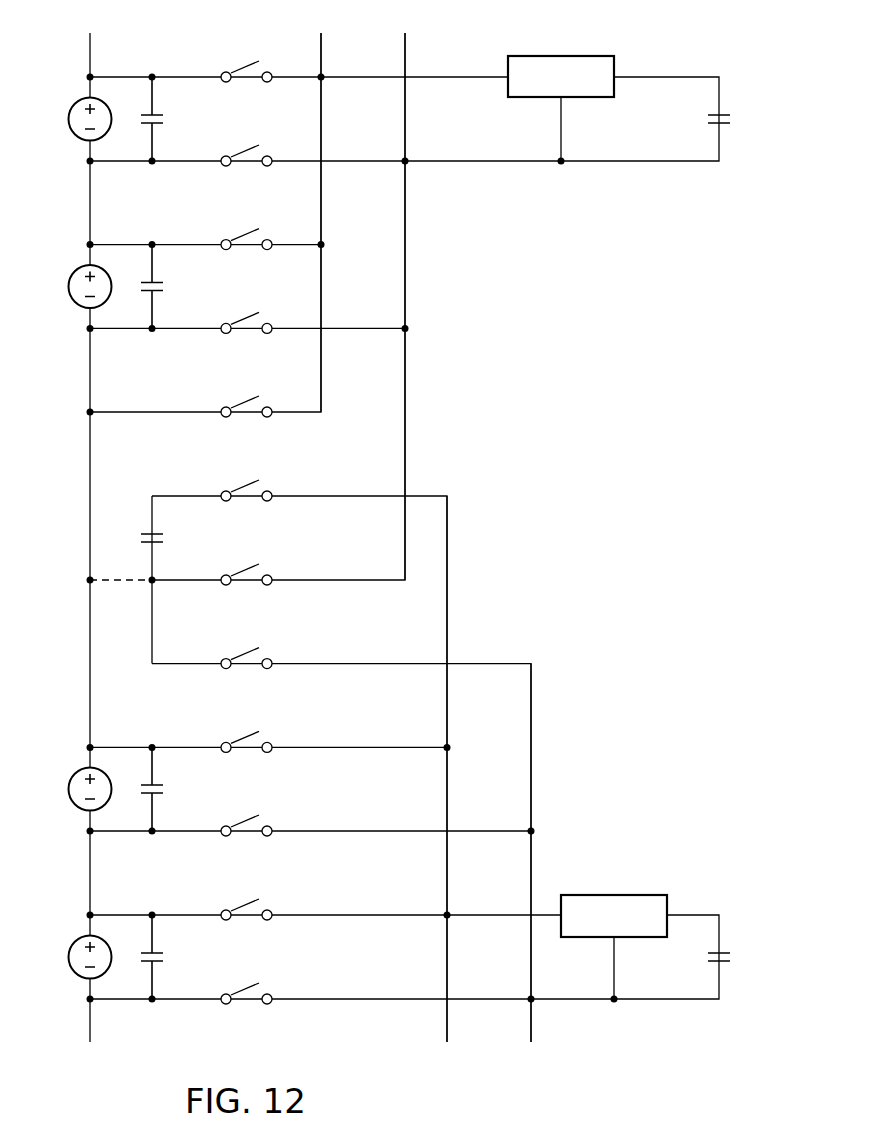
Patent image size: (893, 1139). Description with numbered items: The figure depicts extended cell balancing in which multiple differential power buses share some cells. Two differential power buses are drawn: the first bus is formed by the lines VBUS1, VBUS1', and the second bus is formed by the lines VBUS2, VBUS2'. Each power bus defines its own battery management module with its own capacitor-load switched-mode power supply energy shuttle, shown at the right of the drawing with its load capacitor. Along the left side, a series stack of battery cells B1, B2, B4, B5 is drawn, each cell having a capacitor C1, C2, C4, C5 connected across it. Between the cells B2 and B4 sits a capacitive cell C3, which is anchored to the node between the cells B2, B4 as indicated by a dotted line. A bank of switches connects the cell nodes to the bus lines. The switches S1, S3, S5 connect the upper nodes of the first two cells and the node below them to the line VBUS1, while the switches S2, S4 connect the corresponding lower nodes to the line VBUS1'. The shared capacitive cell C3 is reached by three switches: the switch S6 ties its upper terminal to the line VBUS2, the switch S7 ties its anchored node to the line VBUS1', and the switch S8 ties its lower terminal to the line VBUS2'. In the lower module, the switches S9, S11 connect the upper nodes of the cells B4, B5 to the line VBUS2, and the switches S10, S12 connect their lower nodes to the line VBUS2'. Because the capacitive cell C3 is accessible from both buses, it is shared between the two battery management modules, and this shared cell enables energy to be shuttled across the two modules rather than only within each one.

The cell B1 is at (77, 119).
The cell B2 is at (77, 286).
The cell B4 is at (77, 789).
The cell B5 is at (77, 957).
The capacitor C1 is at (168, 119).
The capacitor C2 is at (168, 287).
The capacitive cell C3 is at (168, 543).
The capacitor C4 is at (168, 789).
The capacitor C5 is at (168, 957).
The switch S1 is at (246, 88).
The switch S2 is at (246, 172).
The switch S3 is at (246, 256).
The switch S4 is at (246, 339).
The switch S5 is at (246, 423).
The switch S6 is at (246, 507).
The switch S7 is at (246, 591).
The switch S8 is at (246, 675).
The switch S9 is at (246, 758).
The switch S10 is at (246, 842).
The switch S11 is at (246, 926).
The switch S12 is at (246, 1010).
The differential power bus line VBUS1 is at (314, 206).
The differential power bus line VBUS1' is at (397, 290).
The differential power bus line VBUS2 is at (439, 790).
The differential power bus line VBUS2' is at (523, 874).